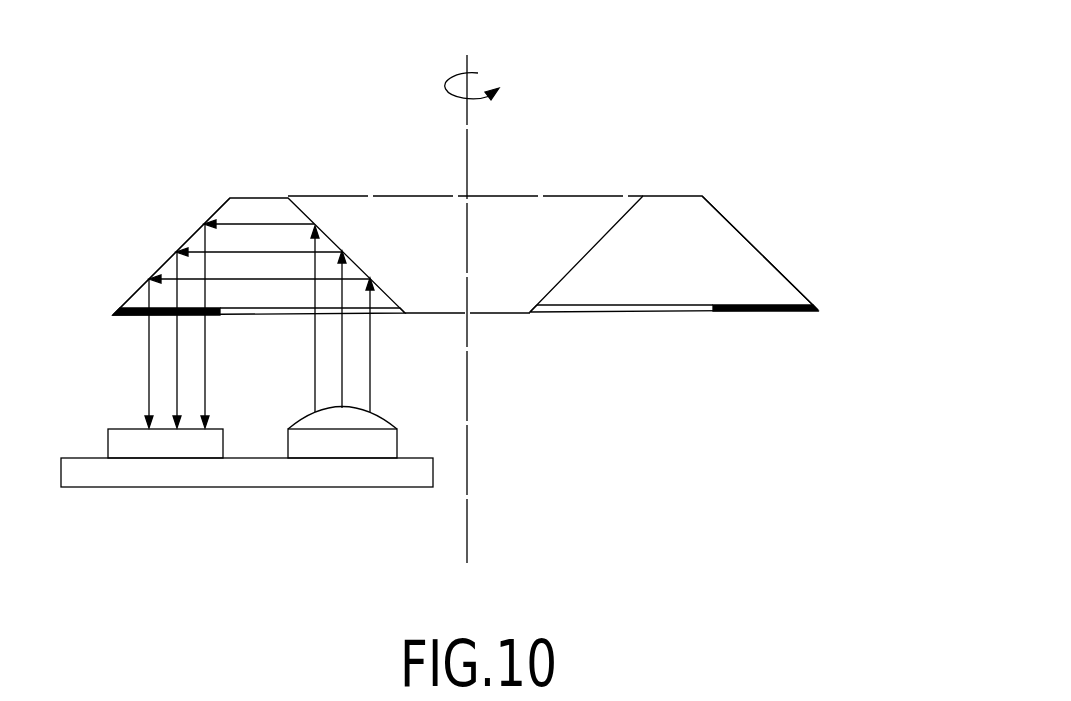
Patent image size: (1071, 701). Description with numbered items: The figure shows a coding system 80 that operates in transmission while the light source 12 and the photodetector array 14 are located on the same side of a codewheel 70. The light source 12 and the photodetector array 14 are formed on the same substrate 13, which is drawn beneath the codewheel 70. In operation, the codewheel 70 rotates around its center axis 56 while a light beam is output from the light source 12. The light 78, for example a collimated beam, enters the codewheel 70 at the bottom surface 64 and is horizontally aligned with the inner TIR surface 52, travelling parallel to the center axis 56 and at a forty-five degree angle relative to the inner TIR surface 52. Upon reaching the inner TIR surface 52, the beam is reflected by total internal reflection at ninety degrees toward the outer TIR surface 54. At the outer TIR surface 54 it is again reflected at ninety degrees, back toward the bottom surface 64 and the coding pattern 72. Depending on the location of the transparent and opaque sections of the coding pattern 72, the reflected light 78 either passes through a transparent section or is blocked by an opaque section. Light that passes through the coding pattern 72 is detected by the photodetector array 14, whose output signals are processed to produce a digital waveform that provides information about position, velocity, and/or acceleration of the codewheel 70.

The coding system 80 is at (792, 43).
The codewheel 70 is at (830, 141).
The center axis 56 is at (467, 138).
The inner TIR surface 52 is at (333, 240).
The outer TIR surface 54 is at (162, 268).
The coding pattern 72 is at (132, 318).
The bottom surface 64 is at (258, 315).
The light 78 is at (370, 342).
The light source 12 is at (398, 443).
The photodetector array 14 is at (107, 445).
The substrate 13 is at (238, 488).